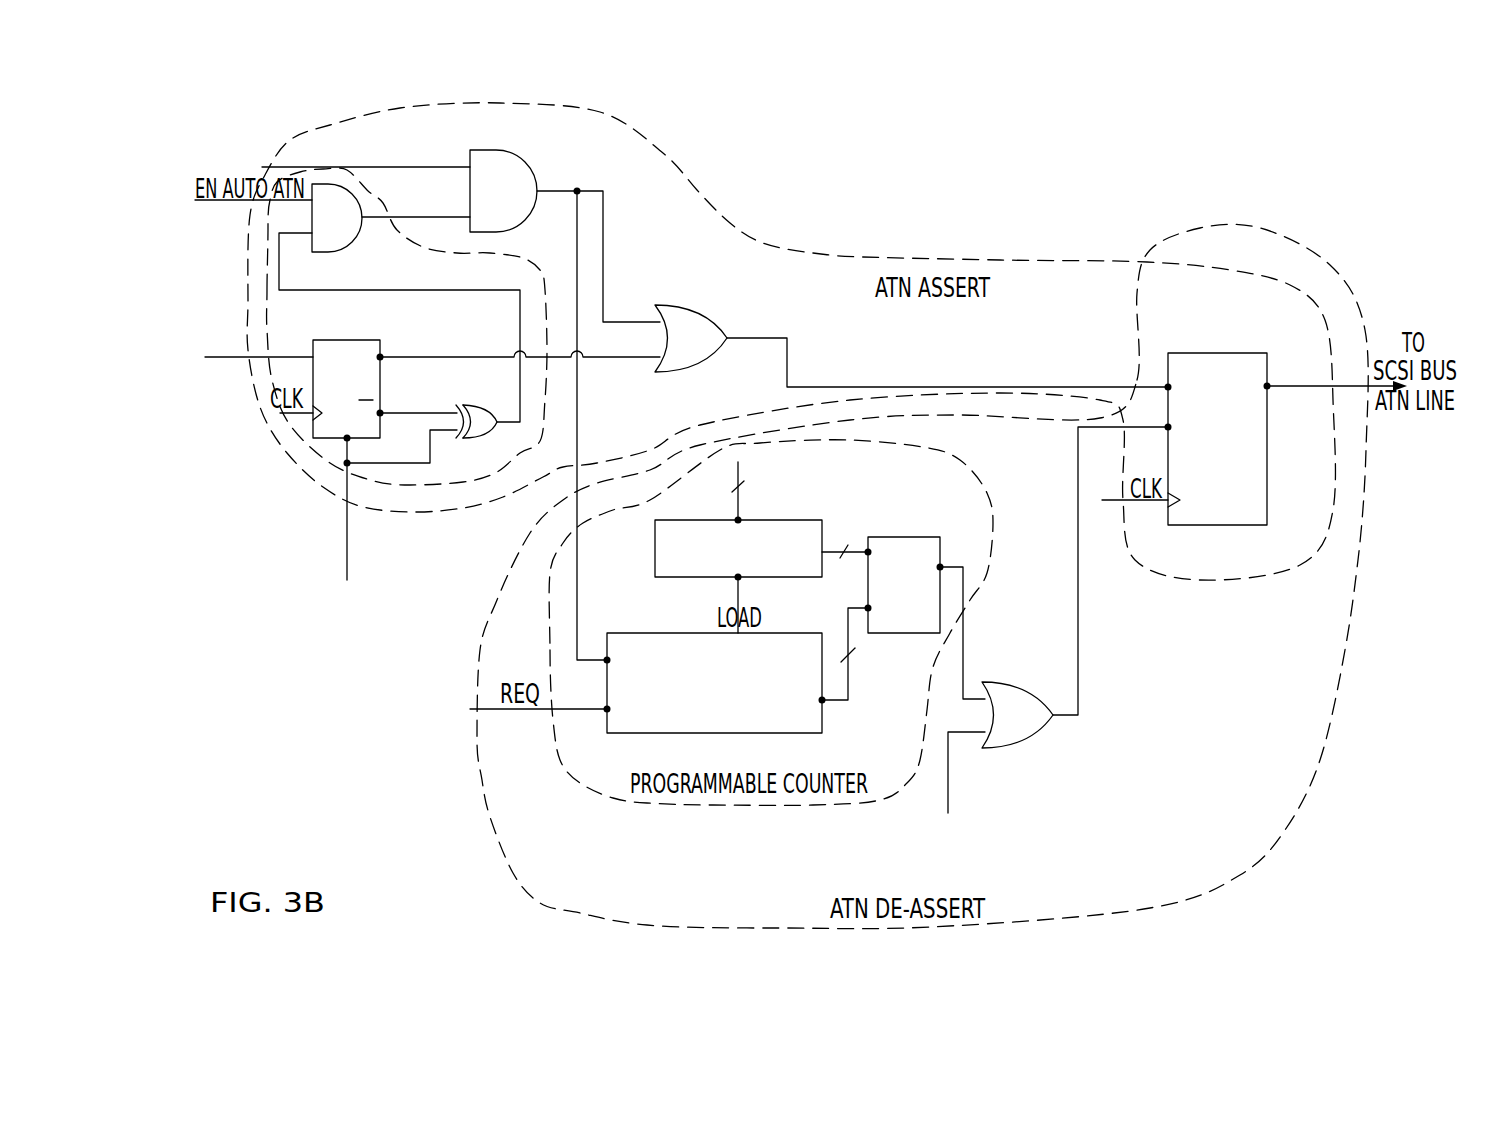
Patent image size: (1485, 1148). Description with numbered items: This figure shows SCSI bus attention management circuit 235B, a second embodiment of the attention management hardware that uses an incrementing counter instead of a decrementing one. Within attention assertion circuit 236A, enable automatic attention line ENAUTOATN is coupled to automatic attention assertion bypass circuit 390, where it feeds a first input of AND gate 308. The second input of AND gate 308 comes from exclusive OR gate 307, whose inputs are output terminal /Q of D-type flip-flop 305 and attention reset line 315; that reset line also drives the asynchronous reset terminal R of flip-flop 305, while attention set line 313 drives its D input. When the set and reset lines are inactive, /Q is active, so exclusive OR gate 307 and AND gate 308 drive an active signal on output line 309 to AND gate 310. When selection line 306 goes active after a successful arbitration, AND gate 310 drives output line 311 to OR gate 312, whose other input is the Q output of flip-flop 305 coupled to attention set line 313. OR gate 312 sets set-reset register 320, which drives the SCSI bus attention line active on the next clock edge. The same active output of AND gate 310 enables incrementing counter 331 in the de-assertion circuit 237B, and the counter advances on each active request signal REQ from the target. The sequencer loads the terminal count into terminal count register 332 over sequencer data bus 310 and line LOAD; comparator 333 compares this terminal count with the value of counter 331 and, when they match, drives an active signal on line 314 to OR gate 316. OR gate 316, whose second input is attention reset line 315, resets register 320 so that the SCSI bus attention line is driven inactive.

The D-type flip-flop 305 is at (353, 340).
The selection line 306 is at (447, 167).
The exclusive OR gate 307 is at (470, 405).
The AND gate 308 is at (343, 240).
The output line 309 is at (412, 217).
The AND gate 310 is at (512, 163).
The output line 311 is at (603, 213).
The OR gate 312 is at (680, 306).
The attention set line 313 is at (225, 357).
The line 314 is at (963, 625).
The attention reset line 315 is at (347, 545).
The OR gate 316 is at (1015, 690).
The set-reset register 320 is at (1225, 353).
The incrementing counter 331 is at (810, 633).
The terminal count register 332 is at (672, 522).
The comparator 333 is at (915, 537).
The automatic attention assertion bypass circuit 390 is at (523, 262).
The SCSI bus attention management circuit 235B is at (826, 212).
The attention assertion circuit 236A is at (627, 135).
The attention de-assertion circuit 237B is at (490, 812).